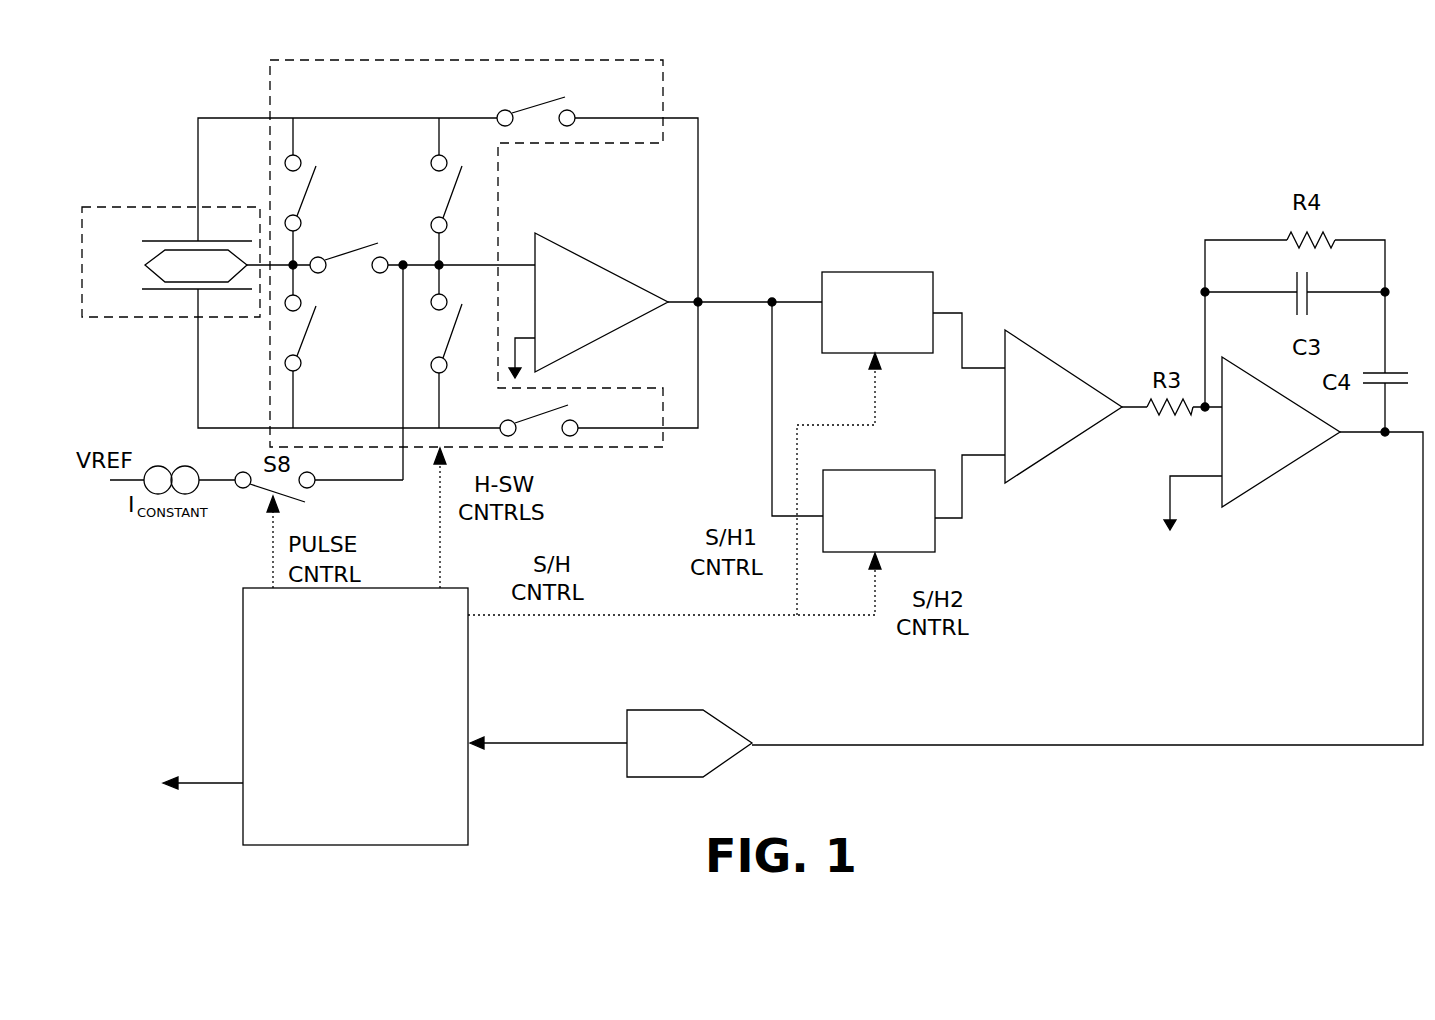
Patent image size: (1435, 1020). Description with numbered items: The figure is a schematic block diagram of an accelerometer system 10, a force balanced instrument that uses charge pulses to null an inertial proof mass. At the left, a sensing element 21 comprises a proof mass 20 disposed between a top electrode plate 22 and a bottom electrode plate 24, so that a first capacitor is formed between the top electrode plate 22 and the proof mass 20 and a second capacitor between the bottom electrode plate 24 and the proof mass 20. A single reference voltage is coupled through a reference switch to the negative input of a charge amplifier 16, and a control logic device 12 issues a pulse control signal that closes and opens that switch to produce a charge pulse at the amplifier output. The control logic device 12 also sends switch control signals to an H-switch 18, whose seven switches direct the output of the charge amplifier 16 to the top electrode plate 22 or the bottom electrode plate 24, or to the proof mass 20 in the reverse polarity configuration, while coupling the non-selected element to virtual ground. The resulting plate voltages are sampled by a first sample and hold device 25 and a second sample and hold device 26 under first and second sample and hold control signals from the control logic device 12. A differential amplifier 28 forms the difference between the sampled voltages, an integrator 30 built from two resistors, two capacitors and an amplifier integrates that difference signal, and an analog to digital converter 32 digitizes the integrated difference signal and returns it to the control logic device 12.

The accelerometer system 10 is at (1020, 82).
The control logic device 12 is at (315, 716).
The charge amplifier 16 is at (562, 246).
The H-switch 18 is at (645, 60).
The proof mass 20 is at (196, 266).
The sensing element 21 is at (170, 207).
The top electrode plate 22 is at (173, 240).
The bottom electrode plate 24 is at (171, 289).
The first sample and hold device 25 is at (873, 272).
The second sample and hold device 26 is at (878, 470).
The differential amplifier 28 is at (1062, 367).
The integrator 30 is at (1275, 477).
The analog to digital converter 32 is at (678, 710).